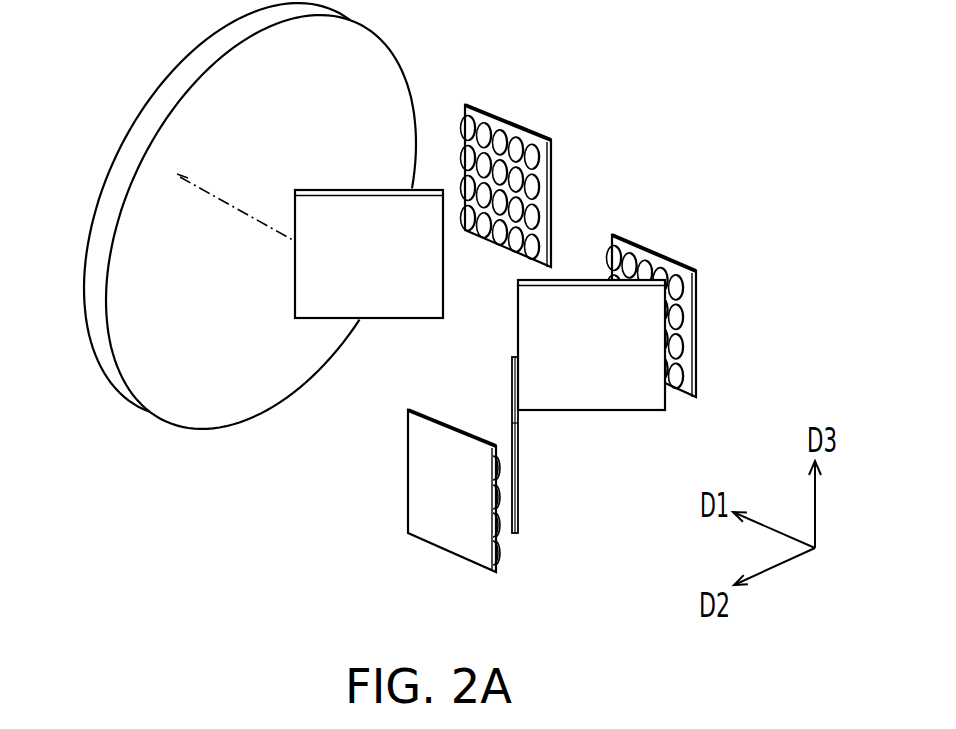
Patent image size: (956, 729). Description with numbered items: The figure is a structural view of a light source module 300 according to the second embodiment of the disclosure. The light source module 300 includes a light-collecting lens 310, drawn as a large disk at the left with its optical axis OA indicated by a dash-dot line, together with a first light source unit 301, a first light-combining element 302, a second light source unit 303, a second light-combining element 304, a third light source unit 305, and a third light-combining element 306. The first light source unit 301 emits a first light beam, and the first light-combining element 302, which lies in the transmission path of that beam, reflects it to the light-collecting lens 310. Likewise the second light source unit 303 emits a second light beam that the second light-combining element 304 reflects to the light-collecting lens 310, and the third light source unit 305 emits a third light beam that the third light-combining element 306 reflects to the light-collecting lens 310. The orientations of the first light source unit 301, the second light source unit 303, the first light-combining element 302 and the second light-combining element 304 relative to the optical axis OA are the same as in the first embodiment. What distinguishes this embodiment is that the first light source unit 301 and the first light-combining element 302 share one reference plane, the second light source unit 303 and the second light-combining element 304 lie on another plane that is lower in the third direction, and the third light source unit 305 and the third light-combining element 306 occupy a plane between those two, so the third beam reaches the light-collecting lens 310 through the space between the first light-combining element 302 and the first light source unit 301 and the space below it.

The light source module 300 is at (783, 34).
The light-collecting lens 310 is at (227, 100).
The first light source unit 301 is at (511, 123).
The first light-combining element 302 is at (383, 306).
The second light source unit 303 is at (445, 532).
The second light-combining element 304 is at (518, 500).
The third light source unit 305 is at (651, 254).
The third light-combining element 306 is at (633, 392).
The optical axis OA is at (180, 177).